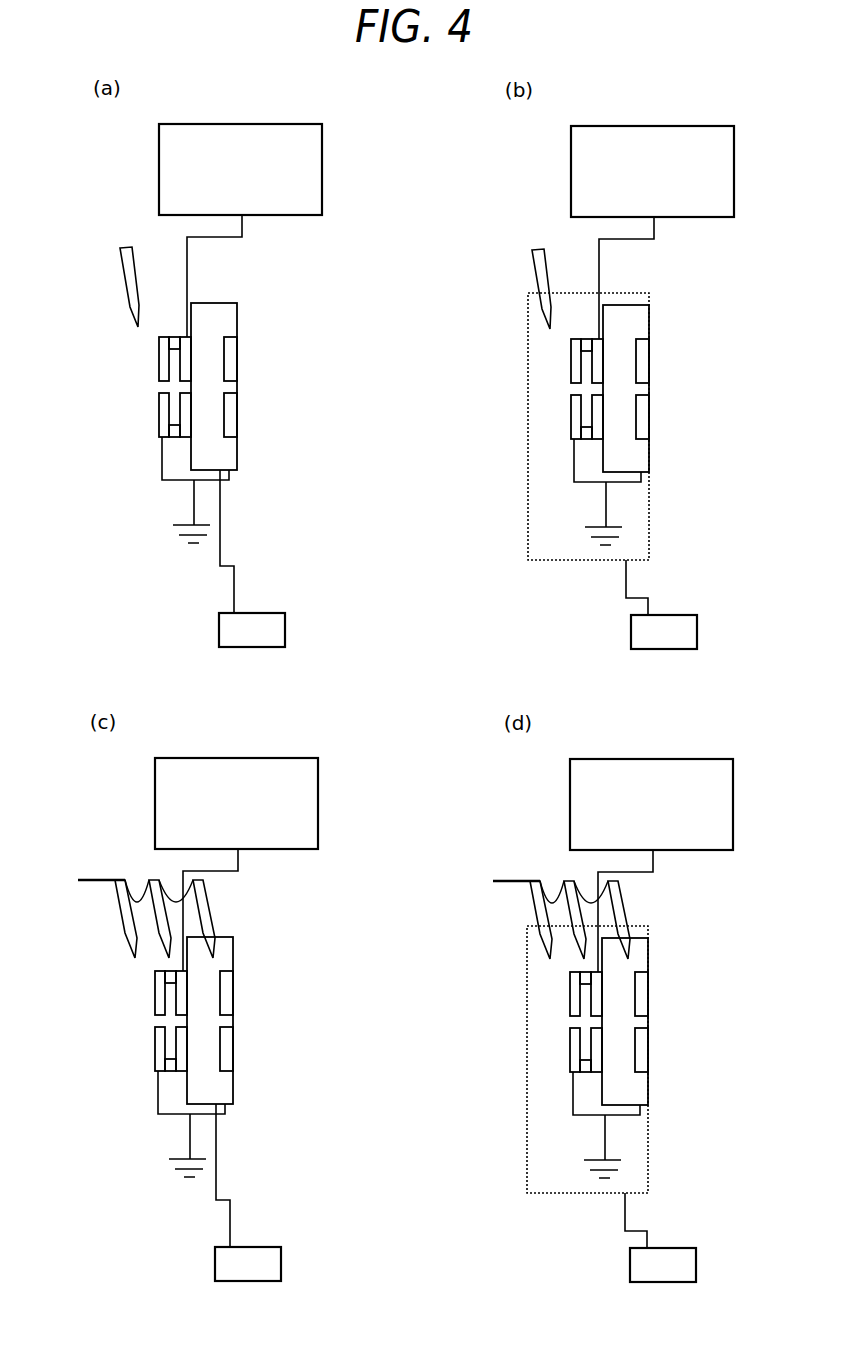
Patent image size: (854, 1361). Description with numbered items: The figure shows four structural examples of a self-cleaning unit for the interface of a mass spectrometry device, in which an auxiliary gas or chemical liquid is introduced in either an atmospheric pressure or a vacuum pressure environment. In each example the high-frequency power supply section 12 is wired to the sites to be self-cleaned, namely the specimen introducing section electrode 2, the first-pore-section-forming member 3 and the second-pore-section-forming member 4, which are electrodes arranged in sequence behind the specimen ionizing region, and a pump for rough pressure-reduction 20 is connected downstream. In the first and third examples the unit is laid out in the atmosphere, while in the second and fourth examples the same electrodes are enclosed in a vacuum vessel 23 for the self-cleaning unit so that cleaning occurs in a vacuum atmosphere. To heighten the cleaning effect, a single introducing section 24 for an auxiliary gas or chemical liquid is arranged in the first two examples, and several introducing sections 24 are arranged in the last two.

The specimen introducing section electrode 2 is at (159, 356).
The first-pore-section-forming member 3 is at (185, 404).
The second-pore-section-forming member 4 is at (230, 408).
The high-frequency power supply section 12 is at (273, 124).
The pump for rough pressure-reduction 20 is at (246, 612).
The vacuum vessel for the self-cleaning unit 23 is at (557, 743).
The section for introducing an auxiliary gas or chemical liquid 24 is at (121, 277).